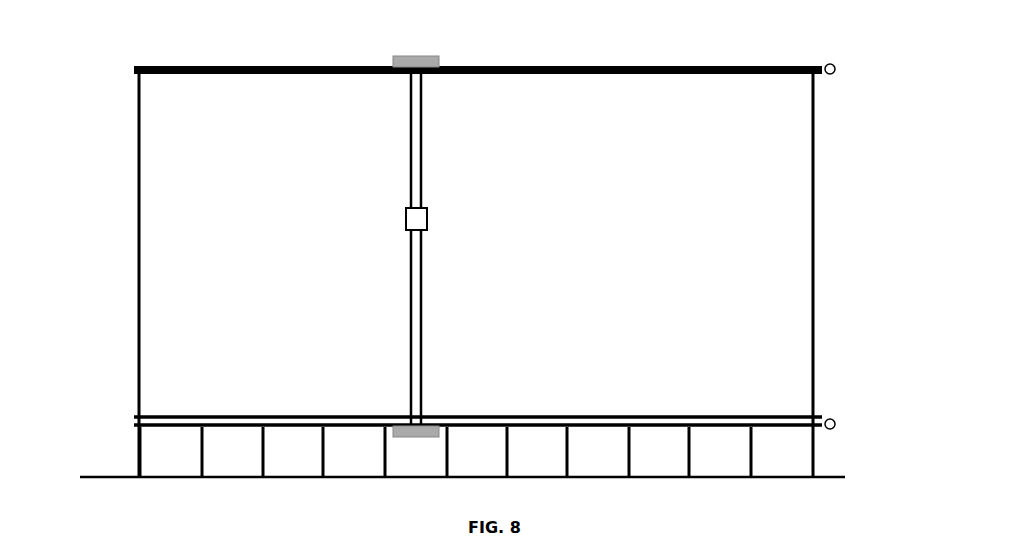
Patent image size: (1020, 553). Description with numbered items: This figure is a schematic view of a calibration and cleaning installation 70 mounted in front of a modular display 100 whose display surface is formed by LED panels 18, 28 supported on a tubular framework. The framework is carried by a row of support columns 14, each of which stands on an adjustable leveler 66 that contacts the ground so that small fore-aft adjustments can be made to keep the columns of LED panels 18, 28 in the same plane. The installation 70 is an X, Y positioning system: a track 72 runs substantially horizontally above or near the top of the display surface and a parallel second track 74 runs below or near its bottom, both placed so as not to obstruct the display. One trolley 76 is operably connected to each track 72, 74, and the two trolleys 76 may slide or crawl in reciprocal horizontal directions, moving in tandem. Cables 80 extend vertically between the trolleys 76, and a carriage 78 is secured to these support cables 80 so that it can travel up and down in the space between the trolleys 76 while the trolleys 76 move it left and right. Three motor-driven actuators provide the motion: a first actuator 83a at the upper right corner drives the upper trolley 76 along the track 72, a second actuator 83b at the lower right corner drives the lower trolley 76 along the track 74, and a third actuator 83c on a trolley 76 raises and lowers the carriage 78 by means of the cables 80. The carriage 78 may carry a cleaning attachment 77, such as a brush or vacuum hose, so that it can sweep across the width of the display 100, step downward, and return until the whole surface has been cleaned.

The calibration and cleaning installation 70 is at (100, 190).
The track 72 is at (692, 66).
The second track 74 is at (770, 430).
The trolley 76 is at (448, 53).
The cleaning attachment 77 is at (420, 216).
The carriage 78 is at (432, 220).
The cable 80 is at (422, 300).
The first actuator 83a is at (843, 69).
The second actuator 83b is at (843, 424).
The third motor-driven actuator 83c is at (438, 76).
The panel 18, 28 is at (784, 213).
The support column 14 is at (627, 445).
The adjustable leveler 66 is at (629, 478).
The modular display 100 is at (727, 486).